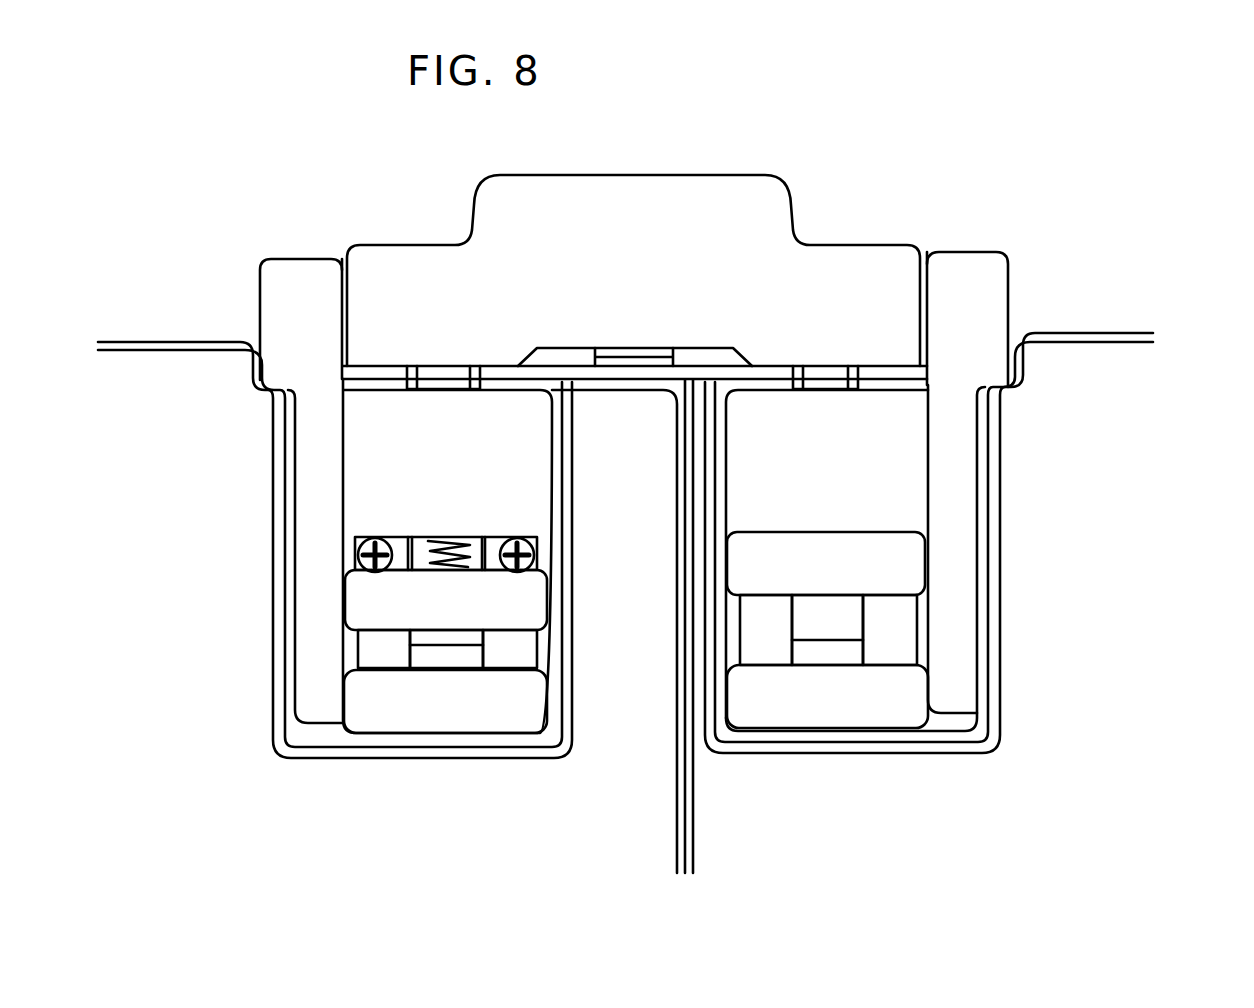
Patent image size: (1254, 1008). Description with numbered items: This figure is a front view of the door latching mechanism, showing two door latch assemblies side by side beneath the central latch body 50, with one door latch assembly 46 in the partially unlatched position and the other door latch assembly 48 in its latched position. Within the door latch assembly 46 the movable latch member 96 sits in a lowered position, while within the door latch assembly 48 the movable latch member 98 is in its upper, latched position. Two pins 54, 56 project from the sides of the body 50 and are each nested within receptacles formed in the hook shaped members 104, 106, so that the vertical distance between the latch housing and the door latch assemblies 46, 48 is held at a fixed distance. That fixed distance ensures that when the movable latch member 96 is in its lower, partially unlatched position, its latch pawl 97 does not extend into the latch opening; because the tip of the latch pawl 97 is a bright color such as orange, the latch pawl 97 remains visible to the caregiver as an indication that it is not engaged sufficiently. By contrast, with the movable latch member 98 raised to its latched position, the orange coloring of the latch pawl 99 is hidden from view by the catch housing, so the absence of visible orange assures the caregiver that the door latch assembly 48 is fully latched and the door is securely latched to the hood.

The door latch assembly 46 is at (390, 778).
The door latch assembly 48 is at (1032, 638).
The housing body 50 is at (748, 195).
The pin 54 is at (332, 300).
The pin 56 is at (925, 303).
The movable latch member 96 is at (370, 600).
The latch pawl 97 is at (442, 378).
The movable latch member 98 is at (890, 567).
The latch pawl 99 is at (840, 377).
The hook shaped member 104 is at (268, 287).
The hook shaped member 106 is at (1012, 300).